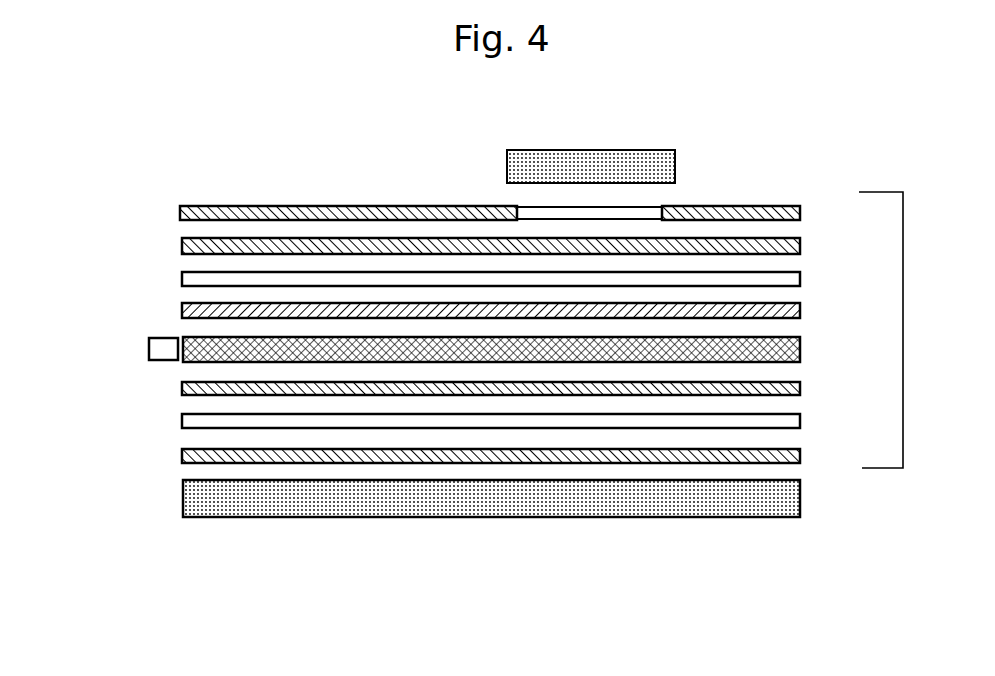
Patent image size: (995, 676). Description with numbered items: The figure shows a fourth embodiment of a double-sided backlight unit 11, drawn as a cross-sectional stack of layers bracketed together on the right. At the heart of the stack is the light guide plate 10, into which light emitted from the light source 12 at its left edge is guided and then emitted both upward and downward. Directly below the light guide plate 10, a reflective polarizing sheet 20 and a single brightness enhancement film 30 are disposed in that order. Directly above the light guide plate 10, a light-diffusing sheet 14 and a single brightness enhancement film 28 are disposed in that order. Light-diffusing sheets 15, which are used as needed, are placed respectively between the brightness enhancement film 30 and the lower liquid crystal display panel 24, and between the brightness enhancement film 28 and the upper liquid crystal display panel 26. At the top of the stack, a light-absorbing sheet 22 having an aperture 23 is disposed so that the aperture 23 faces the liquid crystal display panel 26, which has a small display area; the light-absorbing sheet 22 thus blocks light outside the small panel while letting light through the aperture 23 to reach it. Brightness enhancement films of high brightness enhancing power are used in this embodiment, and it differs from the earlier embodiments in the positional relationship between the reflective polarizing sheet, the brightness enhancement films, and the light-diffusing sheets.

The light-absorbing sheet 22 is at (372, 206).
The aperture 23 is at (572, 207).
The liquid crystal display panel 26 is at (581, 160).
The light-diffusing sheets 15 is at (803, 242).
The brightness enhancement film 28 is at (803, 279).
The light-diffusing sheet 14 is at (803, 312).
The light guide plate 10 is at (803, 349).
The light source 12 is at (149, 350).
The reflective polarizing sheet 20 is at (803, 388).
The brightness enhancement film 30 is at (803, 420).
The liquid crystal display panel 24 is at (803, 489).
The double-sided backlight unit 11 is at (903, 440).